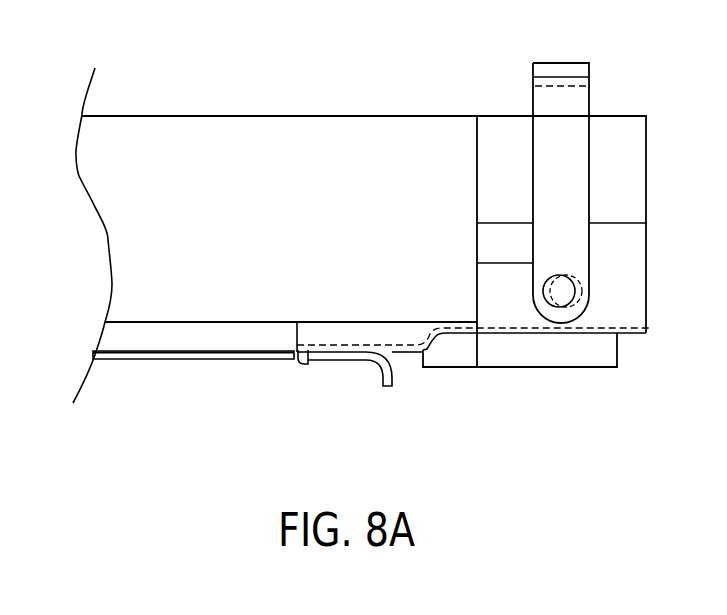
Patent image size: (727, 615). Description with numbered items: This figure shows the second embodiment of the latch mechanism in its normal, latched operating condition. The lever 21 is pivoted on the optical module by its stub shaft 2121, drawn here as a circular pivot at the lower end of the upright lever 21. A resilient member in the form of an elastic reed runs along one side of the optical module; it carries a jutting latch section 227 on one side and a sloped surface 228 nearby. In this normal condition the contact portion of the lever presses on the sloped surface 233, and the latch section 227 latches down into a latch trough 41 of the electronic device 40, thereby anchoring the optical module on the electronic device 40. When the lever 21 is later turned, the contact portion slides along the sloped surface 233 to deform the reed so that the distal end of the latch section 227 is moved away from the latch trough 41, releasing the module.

The lever 21 is at (568, 72).
The stub shaft 2121 is at (559, 292).
The electronic device 40 is at (192, 359).
The latch trough 41 is at (289, 372).
The latch section 227 is at (301, 364).
The sloped surface 228 is at (412, 350).
The sloped surface 233 is at (433, 340).